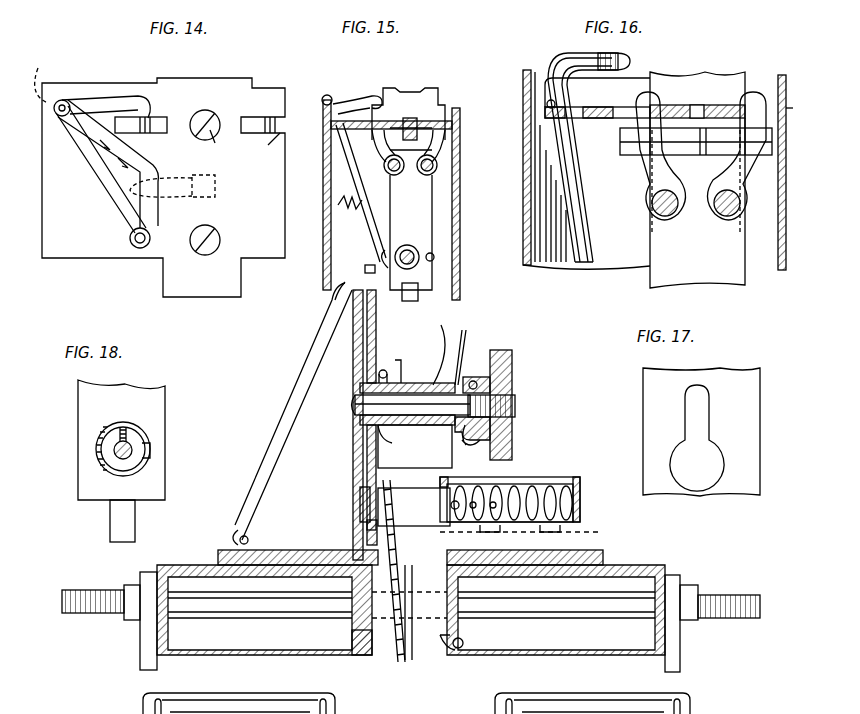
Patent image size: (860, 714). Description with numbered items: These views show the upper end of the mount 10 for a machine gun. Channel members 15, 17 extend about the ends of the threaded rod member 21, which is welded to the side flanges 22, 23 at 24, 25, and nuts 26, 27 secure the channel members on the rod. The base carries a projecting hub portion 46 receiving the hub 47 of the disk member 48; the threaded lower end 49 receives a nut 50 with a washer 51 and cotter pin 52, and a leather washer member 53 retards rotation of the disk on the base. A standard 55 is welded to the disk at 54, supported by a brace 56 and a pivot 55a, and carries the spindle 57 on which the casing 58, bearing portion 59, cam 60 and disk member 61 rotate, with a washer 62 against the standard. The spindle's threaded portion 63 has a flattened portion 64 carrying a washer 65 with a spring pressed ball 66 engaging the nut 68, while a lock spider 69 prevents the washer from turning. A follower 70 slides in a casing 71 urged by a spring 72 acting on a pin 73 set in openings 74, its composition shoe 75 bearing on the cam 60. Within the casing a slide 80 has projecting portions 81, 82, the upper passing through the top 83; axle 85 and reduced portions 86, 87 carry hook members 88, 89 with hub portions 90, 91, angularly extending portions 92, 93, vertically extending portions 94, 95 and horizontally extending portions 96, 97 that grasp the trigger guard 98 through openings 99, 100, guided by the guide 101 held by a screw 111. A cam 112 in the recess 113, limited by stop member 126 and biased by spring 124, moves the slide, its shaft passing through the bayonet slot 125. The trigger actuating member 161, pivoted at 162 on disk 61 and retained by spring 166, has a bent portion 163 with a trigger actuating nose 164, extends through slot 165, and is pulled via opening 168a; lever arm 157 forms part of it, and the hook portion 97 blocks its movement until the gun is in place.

In FIG. 15, the mount 10 is at (470, 248).
In FIG. 15, the channel member 15 is at (145, 645).
In FIG. 15, the channel member 17 is at (680, 655).
In FIG. 15, the threaded rod member 21 is at (556, 605).
In FIG. 15, the side flange 22 is at (165, 655).
In FIG. 15, the side flange 23 is at (650, 655).
In FIG. 15, the weld 24 is at (190, 615).
In FIG. 15, the weld 25 is at (655, 618).
In FIG. 15, the nut 26 is at (120, 622).
In FIG. 15, the nut 27 is at (700, 590).
In FIG. 15, the projecting hub portion 46 is at (348, 620).
In FIG. 15, the hub 47 is at (420, 665).
In FIG. 15, the disk member 48 is at (603, 552).
In FIG. 15, the threaded lower end 49 is at (380, 665).
In FIG. 15, the nut 50 is at (345, 658).
In FIG. 15, the washer 51 is at (460, 640).
In FIG. 15, the cotter pin 52 is at (462, 655).
In FIG. 15, the leather washer member 53 is at (222, 560).
In FIG. 15, the weld 54 is at (350, 548).
In FIG. 15, the standard 55 is at (353, 465).
In FIG. 15, the pivot 55a is at (240, 530).
In FIG. 15, the brace 56 is at (285, 435).
In FIG. 15, the spindle 57 is at (395, 395).
In FIG. 15, the casing 58 is at (458, 285).
In FIG. 17, the casing 58 is at (655, 393).
In FIG. 15, the bearing portion 59 is at (436, 349).
In FIG. 15, the cam 60 is at (380, 440).
In FIG. 15, the disk member 61 is at (378, 340).
In FIG. 15, the washer 62 is at (340, 345).
In FIG. 15, the threaded portion 63 is at (515, 405).
In FIG. 15, the flattened portion 64 is at (512, 395).
In FIG. 15, the washer 65 is at (512, 435).
In FIG. 15, the spring pressed ball 66 is at (475, 378).
In FIG. 15, the nut 68 is at (512, 362).
In FIG. 15, the lock spider 69 is at (474, 444).
In FIG. 15, the follower 70 is at (410, 522).
In FIG. 15, the casing 71 is at (560, 478).
In FIG. 15, the spring 72 is at (560, 500).
In FIG. 15, the pin 73 is at (451, 505).
In FIG. 15, the openings 74 is at (497, 500).
In FIG. 15, the composition shoe 75 is at (360, 495).
In FIG. 16, the slide 80 is at (650, 250).
In FIG. 18, the slide 80 is at (165, 410).
In FIG. 14, the upper projecting portion 81 is at (215, 190).
In FIG. 15, the upper projecting portion 81 is at (412, 118).
In FIG. 15, the lower projecting portion 82 is at (420, 300).
In FIG. 18, the lower projecting portion 82 is at (116, 528).
In FIG. 14, the top 83 is at (75, 250).
In FIG. 15, the top 83 is at (323, 137).
In FIG. 16, the top 83 is at (722, 105).
In FIG. 15, the axle 85 is at (398, 175).
In FIG. 16, the reduced portion 86 is at (648, 210).
In FIG. 15, the reduced portion 87 is at (438, 165).
In FIG. 16, the reduced portion 87 is at (740, 205).
In FIG. 16, the hook member 88 is at (636, 174).
In FIG. 16, the hook member 89 is at (768, 174).
In FIG. 16, the hub portion 90 is at (665, 220).
In FIG. 16, the hub portion 91 is at (727, 220).
In FIG. 16, the angularly extending portion 92 is at (672, 170).
In FIG. 16, the angularly extending portion 93 is at (735, 172).
In FIG. 16, the vertically extending portion 94 is at (640, 130).
In FIG. 16, the vertically extending portion 95 is at (795, 172).
In FIG. 14, the horizontally extending portion 96 is at (260, 117).
In FIG. 15, the horizontally extending portion 96 is at (445, 110).
In FIG. 16, the horizontally extending portion 96 is at (755, 92).
In FIG. 14, the horizontally extending portion 97 is at (190, 105).
In FIG. 15, the horizontally extending portion 97 is at (392, 90).
In FIG. 16, the horizontally extending portion 97 is at (648, 92).
In FIG. 15, the trigger guard 98 is at (440, 105).
In FIG. 16, the trigger guard 98 is at (690, 118).
In FIG. 14, the opening 99 is at (105, 185).
In FIG. 16, the opening 99 is at (623, 100).
In FIG. 14, the opening 100 is at (260, 147).
In FIG. 16, the guide 101 is at (625, 155).
In FIG. 14, the screw 111 is at (197, 146).
In FIG. 16, the screw 111 is at (700, 143).
In FIG. 18, the cam 112 is at (112, 460).
In FIG. 18, the recess 113 is at (100, 442).
In FIG. 15, the spring 124 is at (412, 245).
In FIG. 17, the bayonet slot 125 is at (718, 468).
In FIG. 18, the stop member 126 is at (150, 450).
In FIG. 14, the lever arm 157 is at (115, 200).
In FIG. 14, the trigger actuating member 161 is at (135, 250).
In FIG. 15, the trigger actuating member 161 is at (375, 220).
In FIG. 16, the trigger actuating member 161 is at (585, 172).
In FIG. 15, the pivot 162 is at (365, 269).
In FIG. 14, the bent portion 163 is at (100, 103).
In FIG. 15, the bent portion 163 is at (350, 104).
In FIG. 16, the bent portion 163 is at (568, 58).
In FIG. 14, the trigger actuating nose 164 is at (150, 100).
In FIG. 16, the trigger actuating nose 164 is at (640, 48).
In FIG. 14, the slot 165 is at (150, 212).
In FIG. 15, the spring 166 is at (345, 219).
In FIG. 14, the opening 168a is at (48, 74).
In FIG. 16, the opening 168a is at (547, 107).